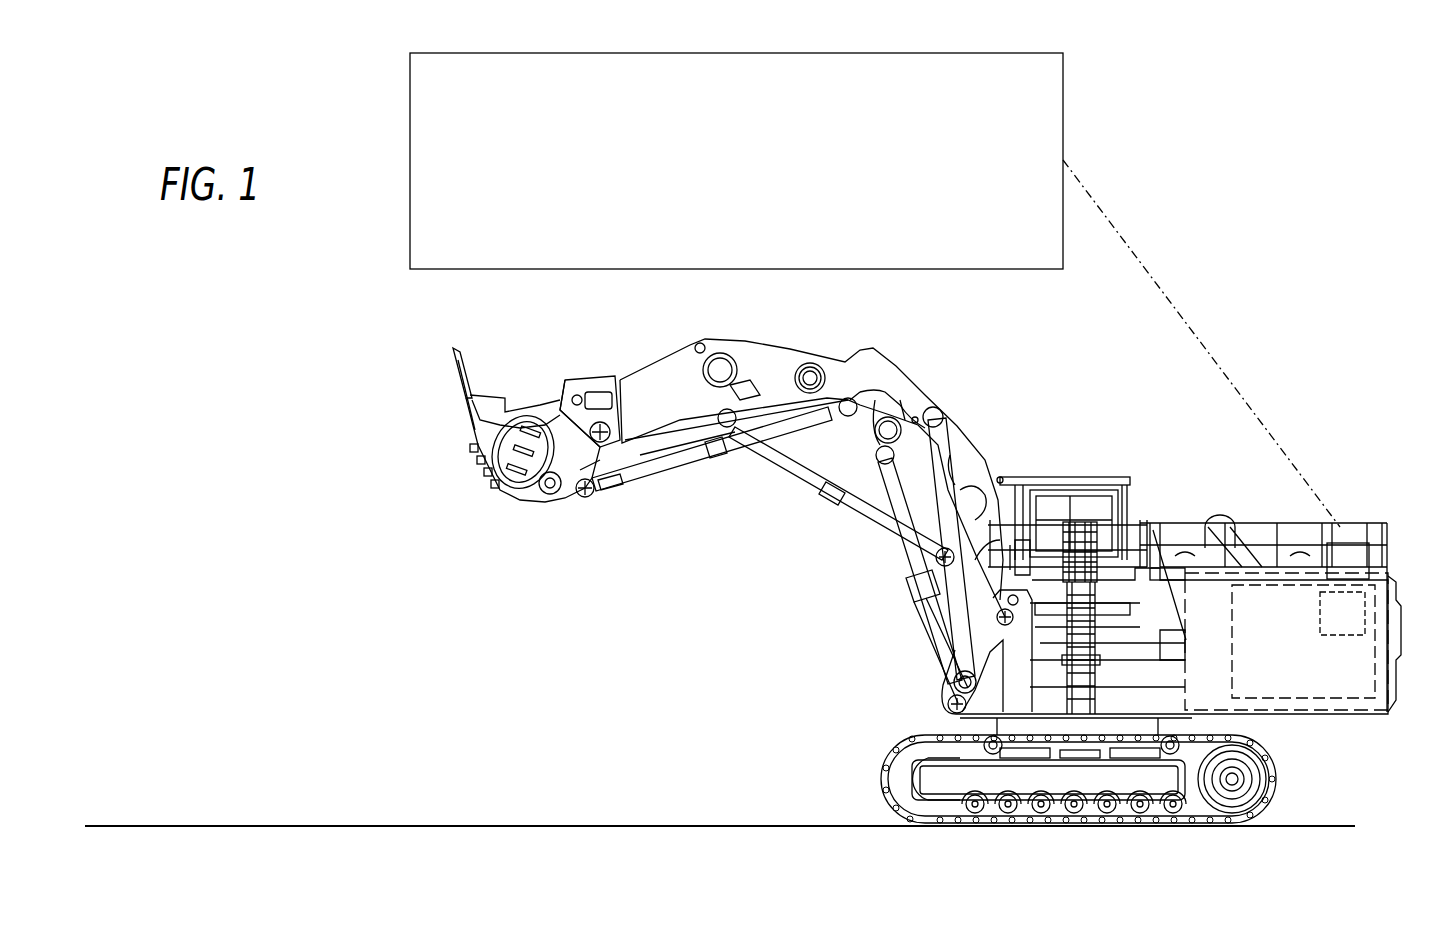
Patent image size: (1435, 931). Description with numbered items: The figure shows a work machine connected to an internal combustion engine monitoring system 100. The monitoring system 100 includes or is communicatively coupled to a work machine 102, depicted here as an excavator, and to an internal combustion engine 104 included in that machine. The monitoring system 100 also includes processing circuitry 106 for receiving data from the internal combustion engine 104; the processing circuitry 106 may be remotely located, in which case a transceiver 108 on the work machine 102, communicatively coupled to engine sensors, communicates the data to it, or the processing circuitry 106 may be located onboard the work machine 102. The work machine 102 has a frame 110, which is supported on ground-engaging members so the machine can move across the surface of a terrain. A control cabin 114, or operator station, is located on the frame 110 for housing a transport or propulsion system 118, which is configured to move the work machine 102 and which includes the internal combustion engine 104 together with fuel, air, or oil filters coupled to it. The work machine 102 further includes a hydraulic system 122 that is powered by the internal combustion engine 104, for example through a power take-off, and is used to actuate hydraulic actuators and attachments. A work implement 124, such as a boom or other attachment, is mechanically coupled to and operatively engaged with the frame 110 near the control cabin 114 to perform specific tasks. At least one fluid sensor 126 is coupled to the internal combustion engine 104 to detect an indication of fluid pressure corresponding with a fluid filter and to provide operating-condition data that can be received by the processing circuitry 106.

The monitoring system 100 is at (1350, 71).
The work machine 102 is at (1068, 444).
The internal combustion engine 104 is at (1317, 654).
The processing circuitry 106 is at (752, 185).
The transceiver 108 is at (1363, 573).
The frame 110 is at (1312, 714).
The control cabin 114 is at (1055, 480).
The propulsion system 118 is at (1223, 649).
The hydraulic system 122 is at (925, 620).
The work implement 124 is at (525, 497).
The fluid sensor 126 is at (1356, 623).